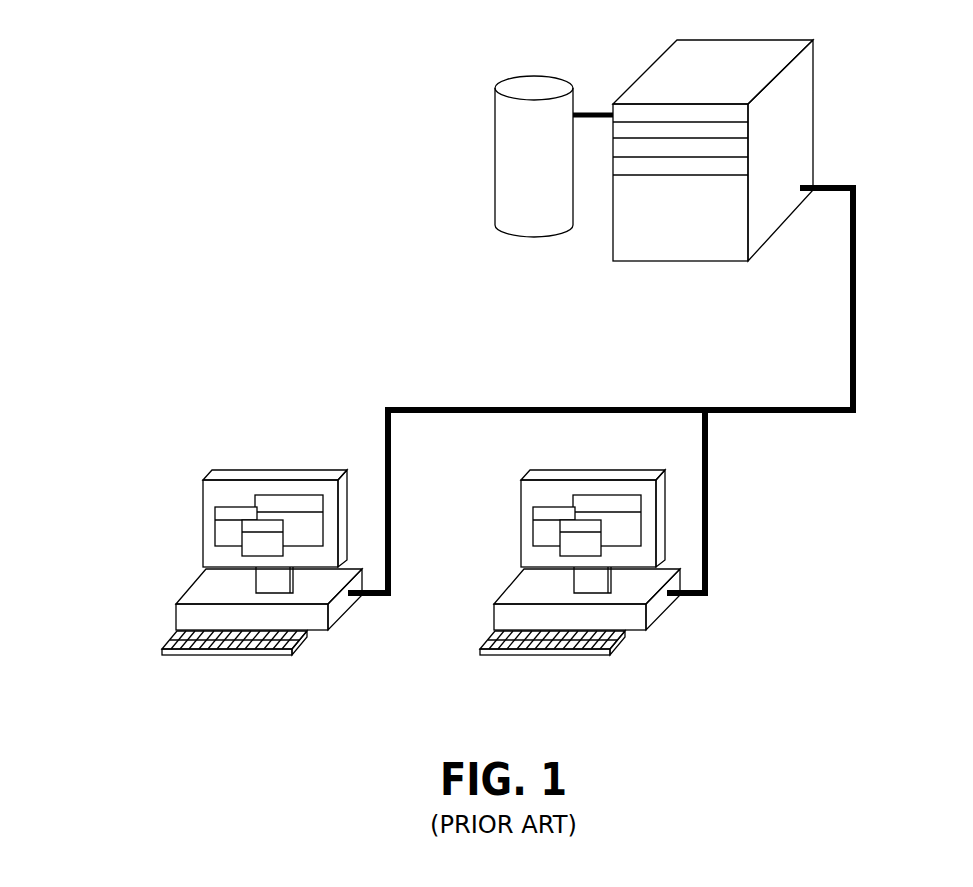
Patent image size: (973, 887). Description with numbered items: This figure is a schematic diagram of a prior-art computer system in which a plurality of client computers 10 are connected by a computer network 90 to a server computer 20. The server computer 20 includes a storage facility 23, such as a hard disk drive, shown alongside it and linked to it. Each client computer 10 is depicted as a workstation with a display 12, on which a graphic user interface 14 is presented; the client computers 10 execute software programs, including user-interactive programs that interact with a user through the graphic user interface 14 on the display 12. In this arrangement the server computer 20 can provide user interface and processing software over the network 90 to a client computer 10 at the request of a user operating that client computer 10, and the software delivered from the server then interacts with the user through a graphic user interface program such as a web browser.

The client computer 10 is at (400, 545).
The display 12 is at (231, 475).
The graphic user interface 14 is at (218, 522).
The server computer 20 is at (813, 77).
The storage facility 23 is at (495, 142).
The computer network 90 is at (855, 342).